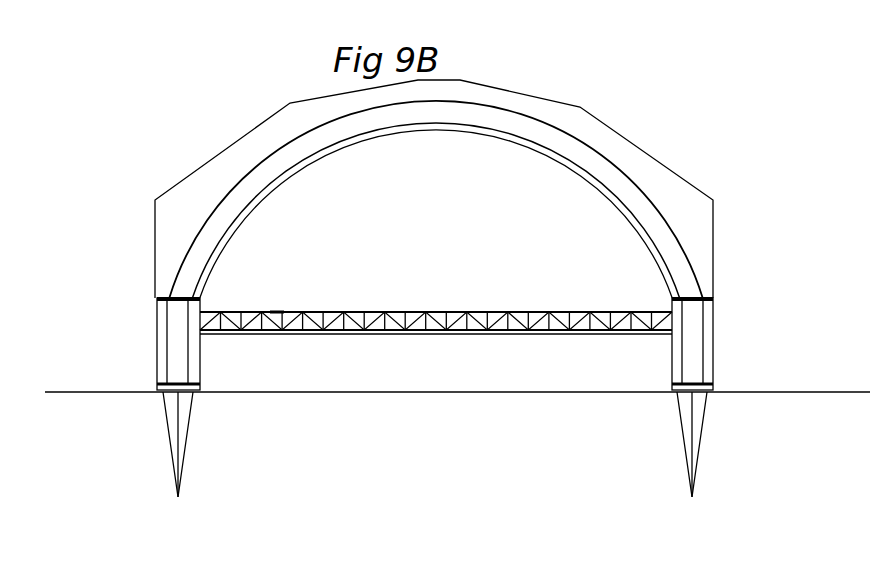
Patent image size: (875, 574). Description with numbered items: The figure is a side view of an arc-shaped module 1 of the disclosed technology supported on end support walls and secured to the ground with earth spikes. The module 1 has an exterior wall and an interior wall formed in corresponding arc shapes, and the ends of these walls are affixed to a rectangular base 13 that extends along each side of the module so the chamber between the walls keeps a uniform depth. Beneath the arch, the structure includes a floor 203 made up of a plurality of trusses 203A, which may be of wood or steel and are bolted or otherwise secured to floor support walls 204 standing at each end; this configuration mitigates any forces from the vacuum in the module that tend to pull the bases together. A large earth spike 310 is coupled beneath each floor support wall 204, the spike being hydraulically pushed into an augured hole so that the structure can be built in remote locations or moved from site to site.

The module 1 is at (627, 213).
The rectangular base 13 is at (714, 298).
The floor support wall 204 is at (174, 351).
The earth spike 310 is at (166, 426).
The floor 203 is at (507, 334).
The truss 203A is at (277, 312).